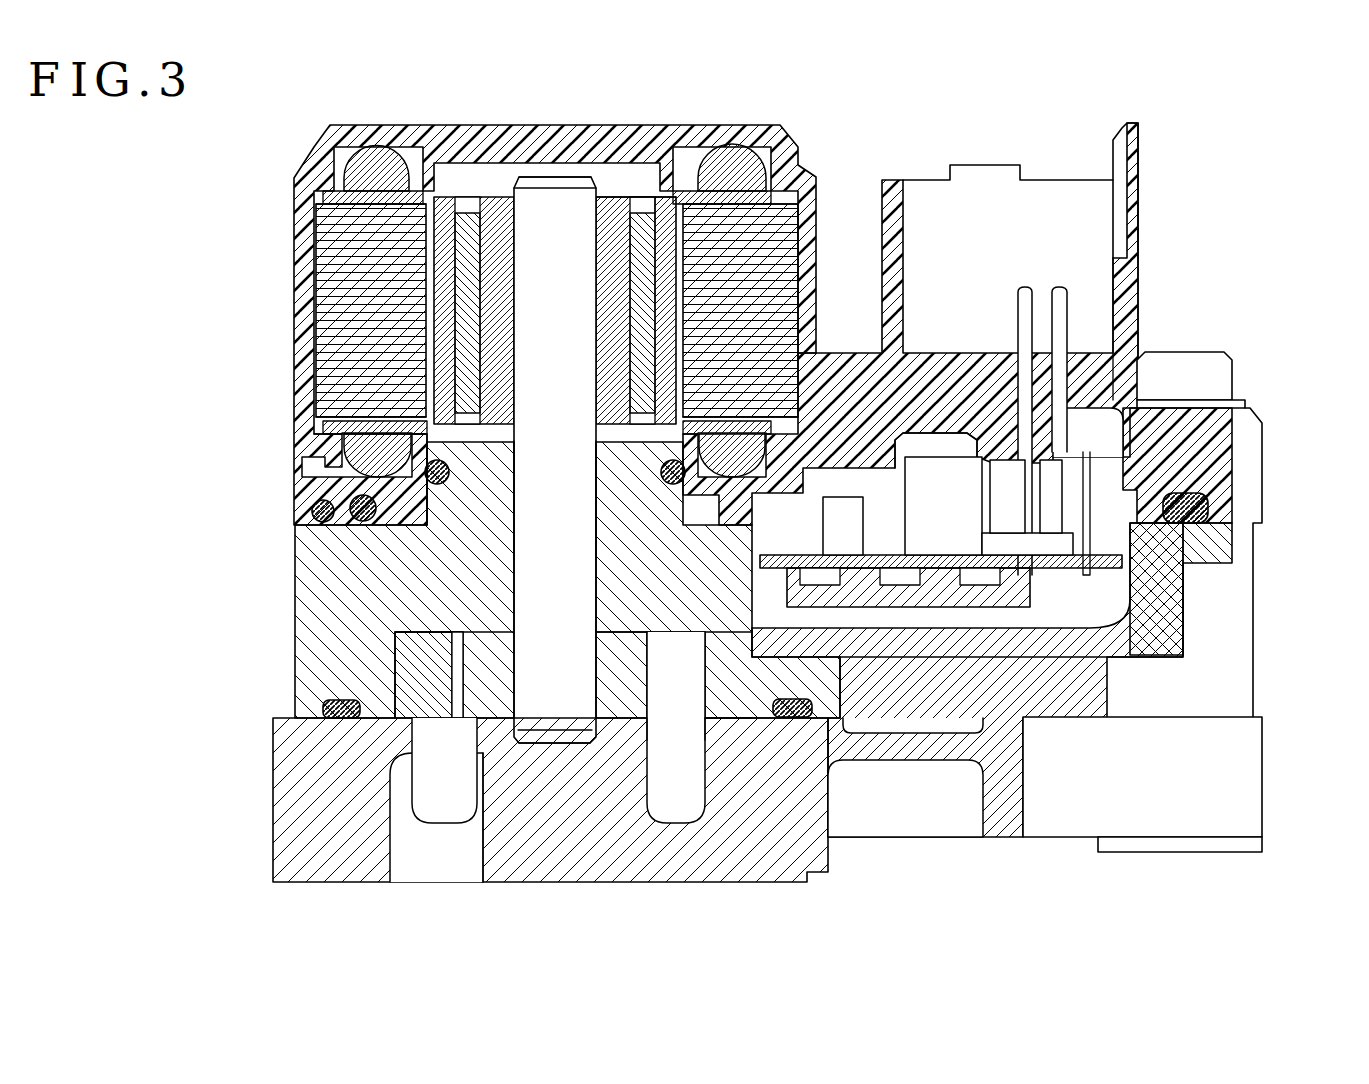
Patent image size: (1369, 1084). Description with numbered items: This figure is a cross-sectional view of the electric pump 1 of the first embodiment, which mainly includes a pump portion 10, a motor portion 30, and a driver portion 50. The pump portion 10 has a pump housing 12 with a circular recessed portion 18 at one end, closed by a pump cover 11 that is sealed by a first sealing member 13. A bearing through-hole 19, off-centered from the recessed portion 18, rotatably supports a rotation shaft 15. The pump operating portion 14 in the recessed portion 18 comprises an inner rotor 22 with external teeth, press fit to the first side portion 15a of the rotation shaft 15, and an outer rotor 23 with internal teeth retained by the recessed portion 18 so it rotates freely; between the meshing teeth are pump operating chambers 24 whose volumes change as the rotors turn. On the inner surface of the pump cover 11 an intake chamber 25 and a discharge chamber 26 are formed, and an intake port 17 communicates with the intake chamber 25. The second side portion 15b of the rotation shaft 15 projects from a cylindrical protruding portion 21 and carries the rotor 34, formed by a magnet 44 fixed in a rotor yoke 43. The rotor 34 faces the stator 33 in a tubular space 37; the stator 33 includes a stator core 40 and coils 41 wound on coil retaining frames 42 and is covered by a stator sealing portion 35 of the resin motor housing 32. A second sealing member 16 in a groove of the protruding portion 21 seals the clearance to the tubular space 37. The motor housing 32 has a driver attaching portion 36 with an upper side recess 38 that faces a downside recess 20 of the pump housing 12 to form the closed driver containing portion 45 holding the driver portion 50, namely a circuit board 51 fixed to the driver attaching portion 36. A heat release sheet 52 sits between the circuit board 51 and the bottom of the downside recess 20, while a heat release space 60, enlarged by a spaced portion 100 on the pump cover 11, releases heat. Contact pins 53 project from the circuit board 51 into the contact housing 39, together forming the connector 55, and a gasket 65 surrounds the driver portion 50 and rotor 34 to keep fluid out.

The electric pump 1 is at (1275, 185).
The pump portion 10 is at (293, 660).
The pump cover 11 is at (275, 800).
The pump housing 12 is at (300, 660).
The first sealing member 13 is at (330, 706).
The pump operating portion 14 is at (395, 660).
The rotation shaft 15 is at (545, 680).
The first side portion 15a is at (525, 735).
The second side portion 15b is at (555, 215).
The second sealing member 16 is at (395, 495).
The intake port 17 is at (470, 865).
The recessed portion 18 is at (420, 740).
The bearing through-hole 19 is at (596, 500).
The downside recess 20 is at (1055, 605).
The protruding portion 21 is at (409, 455).
The inner rotor 22 is at (620, 700).
The outer rotor 23 is at (722, 715).
The pump operating chambers 24 is at (686, 695).
The intake chamber 25 is at (445, 815).
The discharge chamber 26 is at (665, 810).
The motor portion 30 is at (285, 250).
The motor housing 32 is at (756, 308).
The stator 33 is at (316, 325).
The rotor 34 is at (622, 195).
The stator sealing portion 35 is at (358, 147).
The driver attaching portion 36 is at (850, 355).
The tubular space 37 is at (605, 185).
The upper side recess 38 is at (930, 460).
The contact housing 39 is at (1128, 285).
The stator core 40 is at (320, 372).
The coils 41 is at (362, 173).
The coil retaining frames 42 is at (340, 200).
The rotor yoke 43 is at (495, 215).
The magnet 44 is at (470, 215).
The driver containing portion 45 is at (1100, 478).
The driver portion 50 is at (1262, 400).
The circuit board 51 is at (1130, 560).
The heat release sheet 52 is at (965, 607).
The contact pins 53 is at (1058, 287).
The connector 55 is at (1142, 183).
The heat release space 60 is at (915, 700).
The gasket 65 is at (1210, 505).
The spaced portion 100 is at (965, 715).